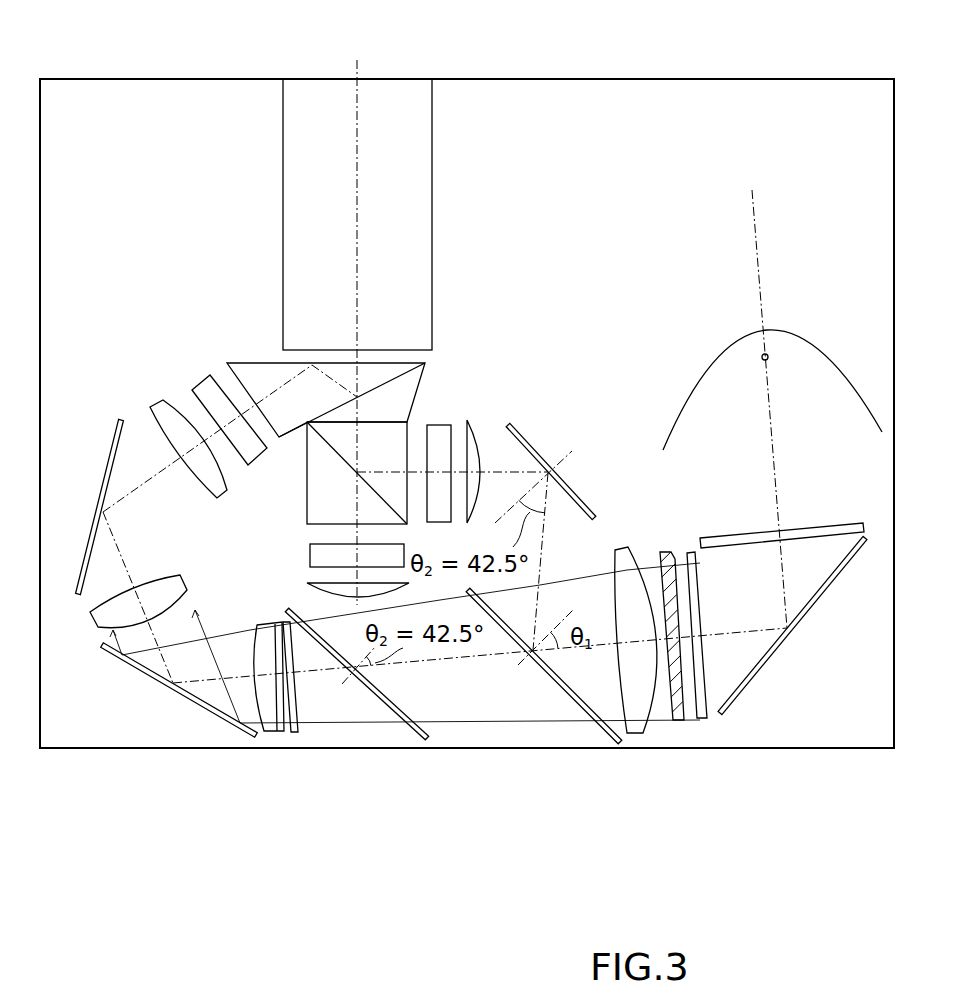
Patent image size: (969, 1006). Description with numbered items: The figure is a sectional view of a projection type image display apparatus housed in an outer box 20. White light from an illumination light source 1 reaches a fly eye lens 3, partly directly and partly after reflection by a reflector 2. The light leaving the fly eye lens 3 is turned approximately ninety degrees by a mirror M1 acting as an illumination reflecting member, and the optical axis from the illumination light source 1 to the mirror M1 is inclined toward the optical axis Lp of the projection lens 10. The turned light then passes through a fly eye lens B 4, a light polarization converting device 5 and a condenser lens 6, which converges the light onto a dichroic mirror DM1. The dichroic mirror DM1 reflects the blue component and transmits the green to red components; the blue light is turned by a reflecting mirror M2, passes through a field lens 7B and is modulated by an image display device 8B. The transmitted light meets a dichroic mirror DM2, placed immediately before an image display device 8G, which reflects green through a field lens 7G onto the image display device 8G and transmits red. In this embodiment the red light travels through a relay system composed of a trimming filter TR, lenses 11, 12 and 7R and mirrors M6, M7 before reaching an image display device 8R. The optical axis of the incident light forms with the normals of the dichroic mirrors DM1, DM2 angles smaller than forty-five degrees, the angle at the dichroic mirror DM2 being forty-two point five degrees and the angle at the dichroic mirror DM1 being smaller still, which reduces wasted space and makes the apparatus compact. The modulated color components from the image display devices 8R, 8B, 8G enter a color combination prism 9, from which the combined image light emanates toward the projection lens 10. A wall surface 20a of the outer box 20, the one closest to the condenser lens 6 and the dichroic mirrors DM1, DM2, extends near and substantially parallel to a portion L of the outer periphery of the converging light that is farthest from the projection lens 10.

The illumination light source 1 is at (768, 358).
The reflector 2 is at (847, 375).
The fly eye lens 3 is at (839, 522).
The fly eye lens B 4 is at (703, 720).
The light polarization converting device 5 is at (680, 722).
The condenser lens 6 is at (635, 730).
The field lens 7B is at (477, 420).
The field lens 7G is at (307, 583).
The lens 7R is at (160, 405).
The image display device 8B is at (438, 425).
The image display device 8G is at (310, 548).
The image display device 8R is at (198, 385).
The color combination prism 9 is at (247, 363).
The projection lens 10 is at (417, 212).
The lens 11 is at (273, 733).
The lens 12 is at (93, 618).
The outer box 20 is at (625, 82).
The wall surface 20a is at (463, 750).
The dichroic mirror DM1 is at (608, 733).
The dichroic mirror DM2 is at (413, 727).
The mirror M1 is at (827, 595).
The reflecting mirror M2 is at (533, 440).
The mirror M6 is at (155, 678).
The mirror M7 is at (112, 452).
The portion L is at (510, 722).
The optical axis Lp is at (350, 118).
The trimming filter TR is at (297, 733).